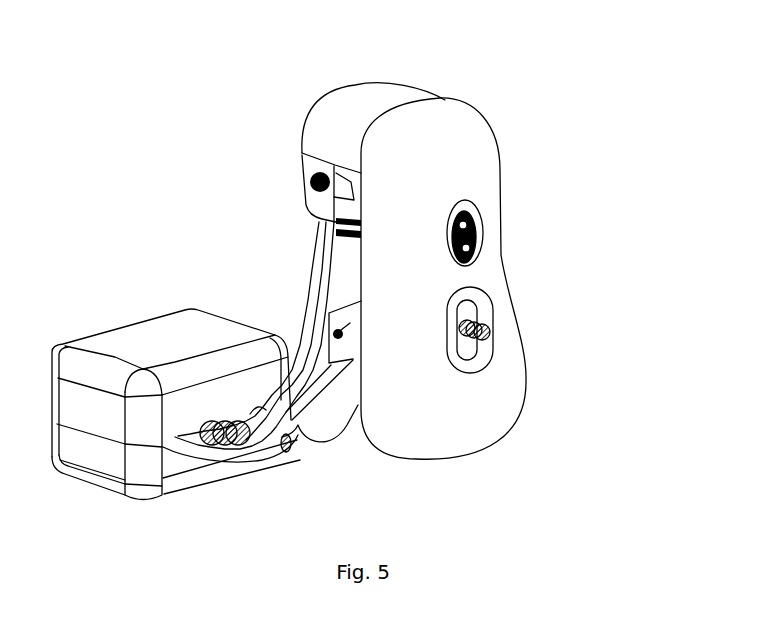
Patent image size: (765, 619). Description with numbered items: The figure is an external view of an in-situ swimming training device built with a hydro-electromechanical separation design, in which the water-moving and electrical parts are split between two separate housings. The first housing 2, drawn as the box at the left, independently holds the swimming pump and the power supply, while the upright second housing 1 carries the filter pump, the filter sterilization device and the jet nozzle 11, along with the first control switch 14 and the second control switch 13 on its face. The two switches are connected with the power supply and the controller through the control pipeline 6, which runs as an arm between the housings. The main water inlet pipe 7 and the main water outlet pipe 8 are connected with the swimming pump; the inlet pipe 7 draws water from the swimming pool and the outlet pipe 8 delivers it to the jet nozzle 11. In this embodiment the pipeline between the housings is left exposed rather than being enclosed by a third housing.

The second housing 1 is at (433, 137).
The first housing 2 is at (140, 347).
The control pipeline 6 is at (313, 278).
The main water inlet pipe 7 is at (301, 428).
The main water outlet pipe 8 is at (336, 410).
The jet nozzle 11 is at (487, 333).
The second control switch 13 is at (477, 240).
The first control switch 14 is at (470, 203).